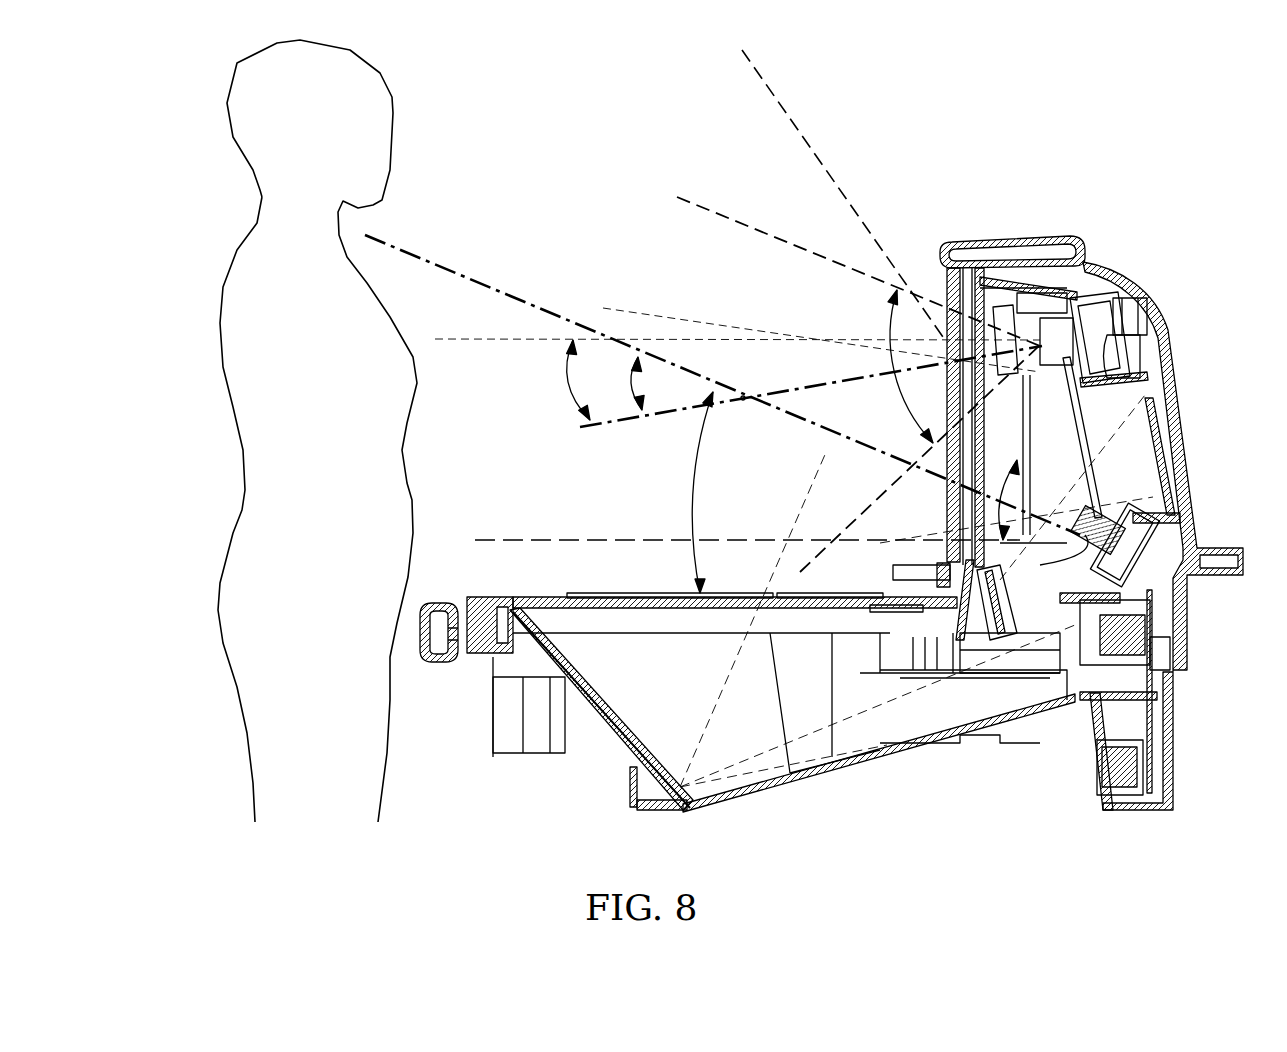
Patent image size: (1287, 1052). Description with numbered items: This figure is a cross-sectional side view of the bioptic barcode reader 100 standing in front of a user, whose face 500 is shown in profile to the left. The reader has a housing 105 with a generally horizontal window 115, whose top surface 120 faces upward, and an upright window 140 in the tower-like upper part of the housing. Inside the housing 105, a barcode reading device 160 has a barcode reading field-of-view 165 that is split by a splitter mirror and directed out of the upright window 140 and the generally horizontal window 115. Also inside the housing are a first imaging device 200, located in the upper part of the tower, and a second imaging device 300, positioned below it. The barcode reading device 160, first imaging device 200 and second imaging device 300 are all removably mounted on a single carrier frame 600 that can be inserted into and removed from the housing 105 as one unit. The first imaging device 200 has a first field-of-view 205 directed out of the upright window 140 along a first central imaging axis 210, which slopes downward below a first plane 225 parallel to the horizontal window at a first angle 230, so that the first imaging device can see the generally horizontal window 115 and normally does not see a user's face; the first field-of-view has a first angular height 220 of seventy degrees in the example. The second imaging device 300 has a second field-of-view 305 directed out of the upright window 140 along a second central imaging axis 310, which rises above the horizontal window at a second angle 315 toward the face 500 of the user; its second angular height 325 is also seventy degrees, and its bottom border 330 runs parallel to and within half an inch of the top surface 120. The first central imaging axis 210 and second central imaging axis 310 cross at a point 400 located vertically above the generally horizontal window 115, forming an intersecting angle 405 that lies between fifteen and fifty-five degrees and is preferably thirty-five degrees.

The bioptic barcode reader 100 is at (982, 136).
The housing 105 is at (1207, 640).
The generally horizontal window 115 is at (630, 593).
The top surface of generally horizontal window 120 is at (537, 589).
The upright window 140 is at (978, 268).
The barcode reading device 160 is at (1153, 677).
The barcode reading field-of-view 165 is at (968, 683).
The first imaging device 200 is at (1068, 340).
The first field-of-view 205 is at (702, 203).
The first central imaging axis 210 is at (820, 387).
The first angular height 220 is at (886, 328).
The first plane 225 is at (440, 337).
The first angle 230 is at (585, 425).
The second imaging device 300 is at (1153, 467).
The second field-of-view 305 is at (788, 102).
The second central imaging axis 310 is at (450, 270).
The second angle 315 is at (693, 470).
The second angular height 325 is at (900, 465).
The bottom border of second field-of-view 330 is at (593, 540).
The point 400 is at (743, 402).
The intersecting angle 405 is at (640, 403).
The face of a user 500 is at (419, 133).
The carrier frame 600 is at (1130, 380).